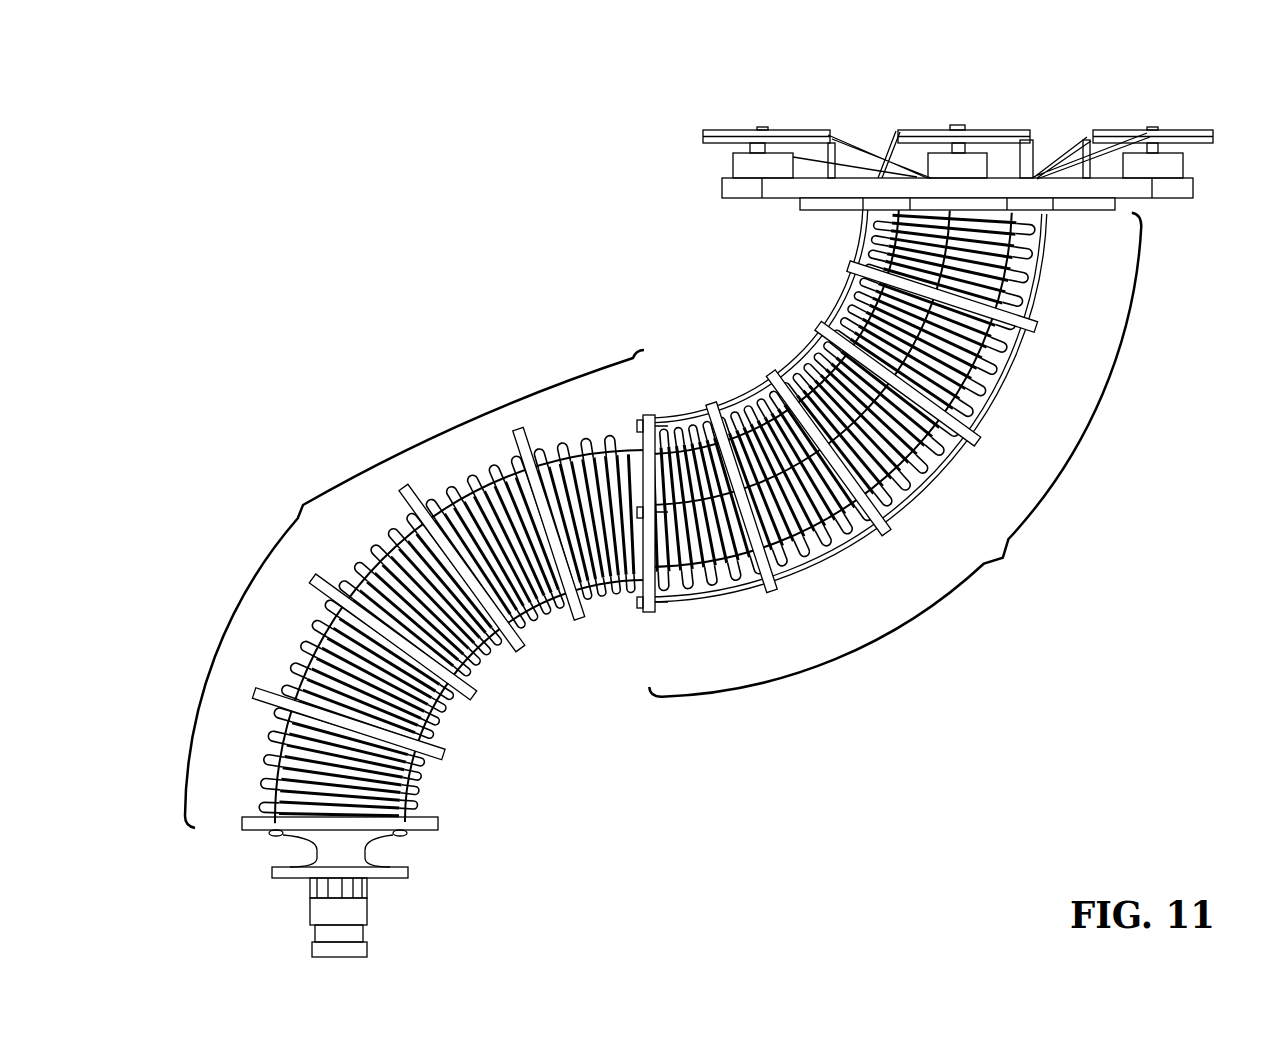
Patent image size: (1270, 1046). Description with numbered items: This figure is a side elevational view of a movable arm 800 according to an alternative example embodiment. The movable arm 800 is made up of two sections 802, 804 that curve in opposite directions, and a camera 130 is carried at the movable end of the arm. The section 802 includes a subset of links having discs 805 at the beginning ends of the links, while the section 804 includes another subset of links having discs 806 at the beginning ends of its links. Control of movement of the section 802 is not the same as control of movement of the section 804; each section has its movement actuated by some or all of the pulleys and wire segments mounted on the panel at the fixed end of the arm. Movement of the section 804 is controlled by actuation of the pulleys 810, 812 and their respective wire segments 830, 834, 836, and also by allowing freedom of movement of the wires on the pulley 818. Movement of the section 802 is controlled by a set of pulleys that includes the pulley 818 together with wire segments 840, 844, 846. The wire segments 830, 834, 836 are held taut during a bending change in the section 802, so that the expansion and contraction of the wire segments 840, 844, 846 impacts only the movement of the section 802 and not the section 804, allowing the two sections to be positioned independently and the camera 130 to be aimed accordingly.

The camera 130 is at (360, 912).
The movable arm 800 is at (699, 499).
The section 802 is at (415, 590).
The section 804 is at (893, 452).
The discs 805 is at (520, 652).
The discs 806 is at (822, 326).
The pulley 810 is at (978, 128).
The pulley 812 is at (1176, 128).
The pulley 818 is at (780, 128).
The wire segment 830 is at (953, 247).
The wire segment 834 is at (1041, 280).
The wire segment 836 is at (865, 247).
The wire segment 840 is at (602, 450).
The wire segment 844 is at (611, 580).
The wire segment 846 is at (862, 138).